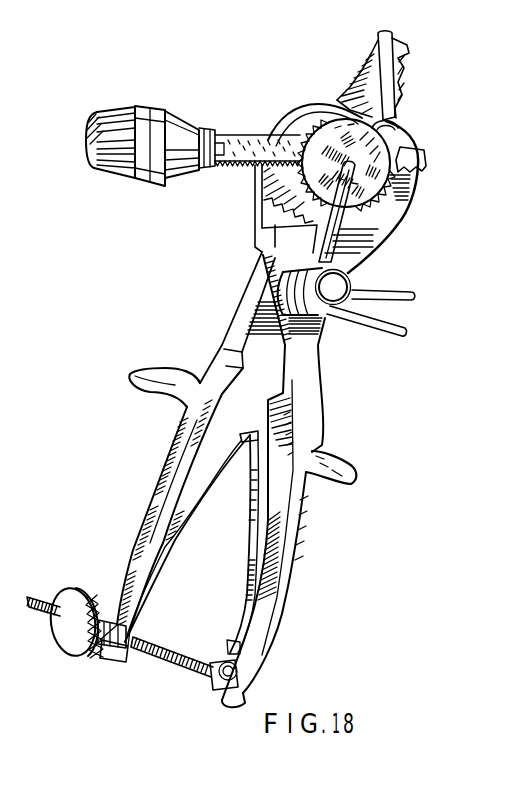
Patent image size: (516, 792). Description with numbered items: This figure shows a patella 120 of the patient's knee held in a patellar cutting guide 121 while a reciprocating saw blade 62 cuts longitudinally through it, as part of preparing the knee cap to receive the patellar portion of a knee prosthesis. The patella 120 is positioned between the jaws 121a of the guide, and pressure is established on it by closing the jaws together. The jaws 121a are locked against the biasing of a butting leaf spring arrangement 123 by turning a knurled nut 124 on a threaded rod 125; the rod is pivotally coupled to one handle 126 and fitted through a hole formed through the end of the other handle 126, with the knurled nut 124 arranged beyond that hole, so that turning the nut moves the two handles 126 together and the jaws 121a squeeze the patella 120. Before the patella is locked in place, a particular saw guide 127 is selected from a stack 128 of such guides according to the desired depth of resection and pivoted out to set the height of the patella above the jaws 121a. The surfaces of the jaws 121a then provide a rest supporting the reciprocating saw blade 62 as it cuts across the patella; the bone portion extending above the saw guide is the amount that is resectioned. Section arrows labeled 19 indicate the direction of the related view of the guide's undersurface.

The section line / view direction arrows for FIG. 19 is at (262, 60).
The reciprocating saw blade 62 is at (252, 140).
The patella 120 is at (390, 124).
The patellar cutting guide 121 is at (423, 207).
The jaws 121a is at (267, 202).
The saw guide 127 is at (377, 210).
The stack 128 is at (293, 297).
The butting leaf spring arrangement 123 is at (247, 540).
The knurled nut 124 is at (80, 595).
The threaded rod 125 is at (183, 663).
The handles 126 is at (140, 620).